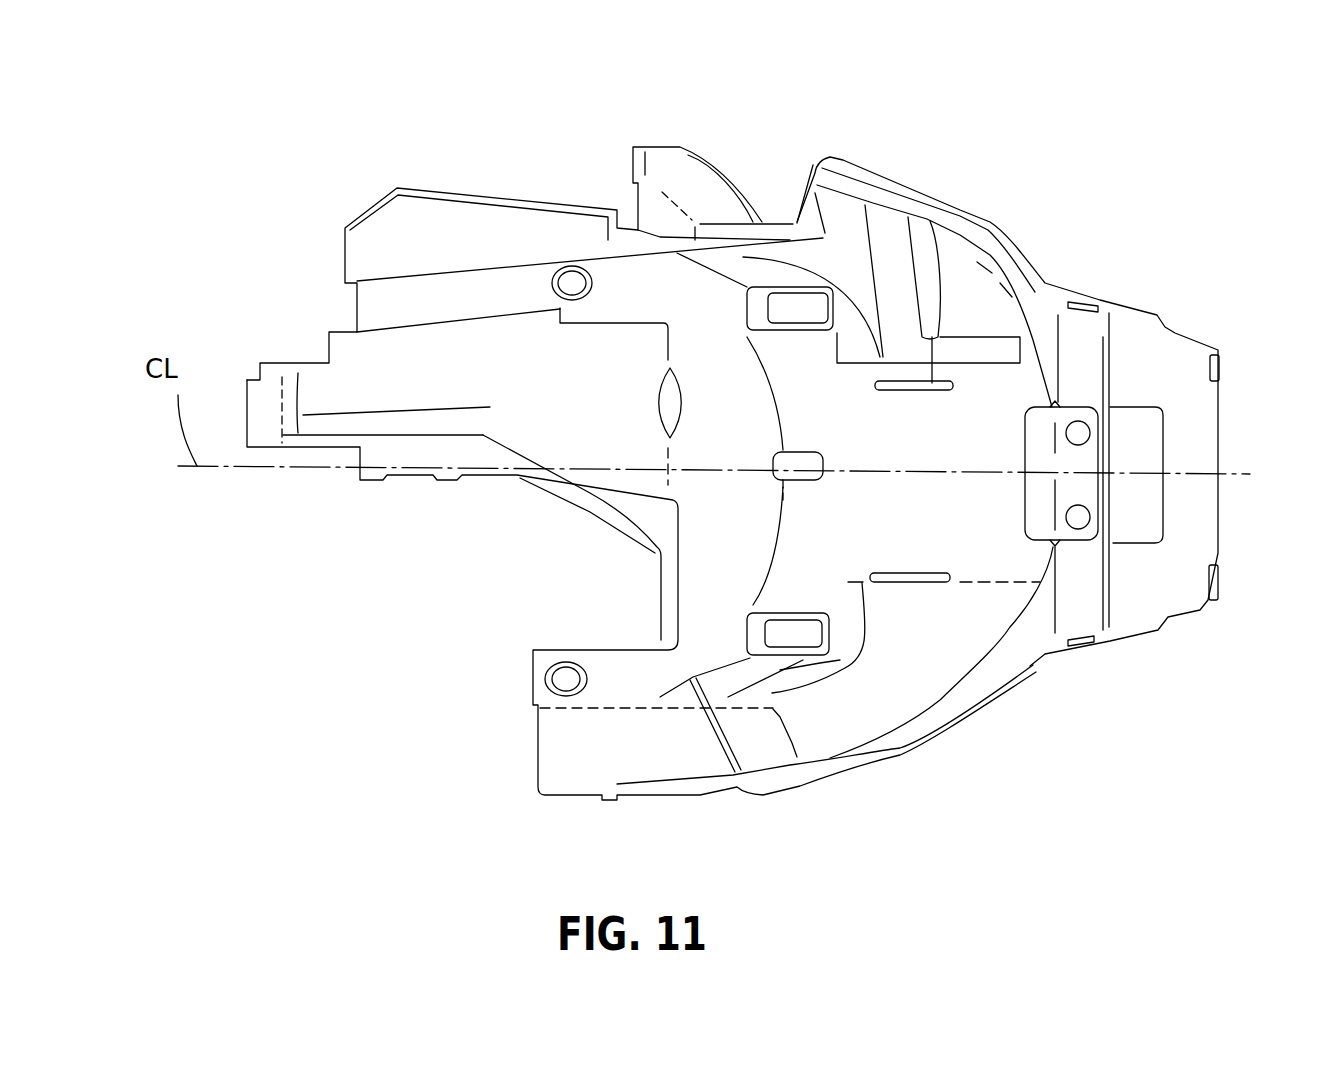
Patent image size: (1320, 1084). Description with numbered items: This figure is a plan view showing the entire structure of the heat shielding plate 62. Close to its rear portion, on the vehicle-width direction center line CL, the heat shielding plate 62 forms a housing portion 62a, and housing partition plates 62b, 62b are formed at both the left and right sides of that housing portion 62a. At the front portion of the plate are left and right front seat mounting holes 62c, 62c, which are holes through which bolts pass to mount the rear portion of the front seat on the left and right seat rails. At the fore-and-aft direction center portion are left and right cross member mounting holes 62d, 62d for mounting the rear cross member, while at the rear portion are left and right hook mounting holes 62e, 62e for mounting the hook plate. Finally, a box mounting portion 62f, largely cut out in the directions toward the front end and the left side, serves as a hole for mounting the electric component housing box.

The heat shielding plate 62 is at (322, 212).
The housing portion 62a is at (915, 486).
The housing partition plate 62b is at (932, 381).
The front seat mounting hole 62c is at (570, 266).
The cross member mounting hole 62d is at (790, 296).
The hook mounting hole 62e is at (1078, 420).
The box mounting portion 62f is at (577, 509).